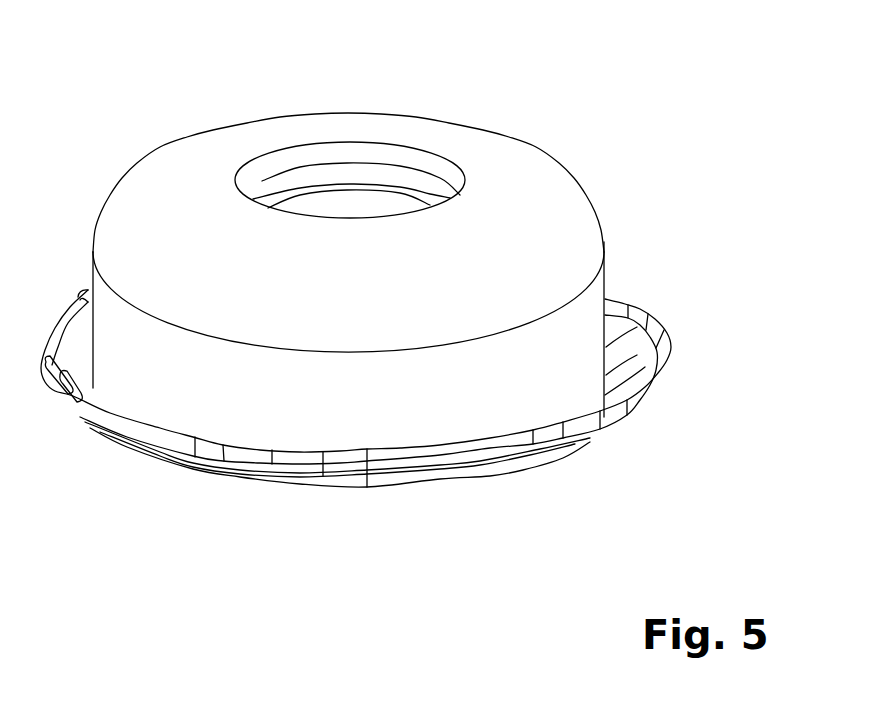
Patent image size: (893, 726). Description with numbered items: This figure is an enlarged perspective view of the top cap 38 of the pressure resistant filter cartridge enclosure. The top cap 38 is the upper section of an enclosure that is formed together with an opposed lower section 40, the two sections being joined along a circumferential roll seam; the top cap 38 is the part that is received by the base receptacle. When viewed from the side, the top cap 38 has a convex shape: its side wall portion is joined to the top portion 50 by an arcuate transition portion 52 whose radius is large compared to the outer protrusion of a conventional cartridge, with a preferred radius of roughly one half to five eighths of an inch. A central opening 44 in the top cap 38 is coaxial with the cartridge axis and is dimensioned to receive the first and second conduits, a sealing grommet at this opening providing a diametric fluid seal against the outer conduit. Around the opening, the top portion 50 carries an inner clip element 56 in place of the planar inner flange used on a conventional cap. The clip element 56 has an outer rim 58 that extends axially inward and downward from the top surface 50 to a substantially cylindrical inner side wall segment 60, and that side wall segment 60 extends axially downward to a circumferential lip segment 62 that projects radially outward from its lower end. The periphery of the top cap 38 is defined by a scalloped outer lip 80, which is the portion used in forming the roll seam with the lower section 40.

The top cap 38 is at (567, 52).
The lower section 40 is at (607, 287).
The central opening 44 is at (310, 201).
The top portion 50 is at (358, 113).
The arcuate transition portion 52 is at (558, 160).
The inner clip element 56 is at (342, 202).
The outer rim 58 is at (255, 168).
The inner side wall segment 60 is at (264, 185).
The circumferential lip segment 62 is at (357, 192).
The scalloped outer lip 80 is at (82, 422).